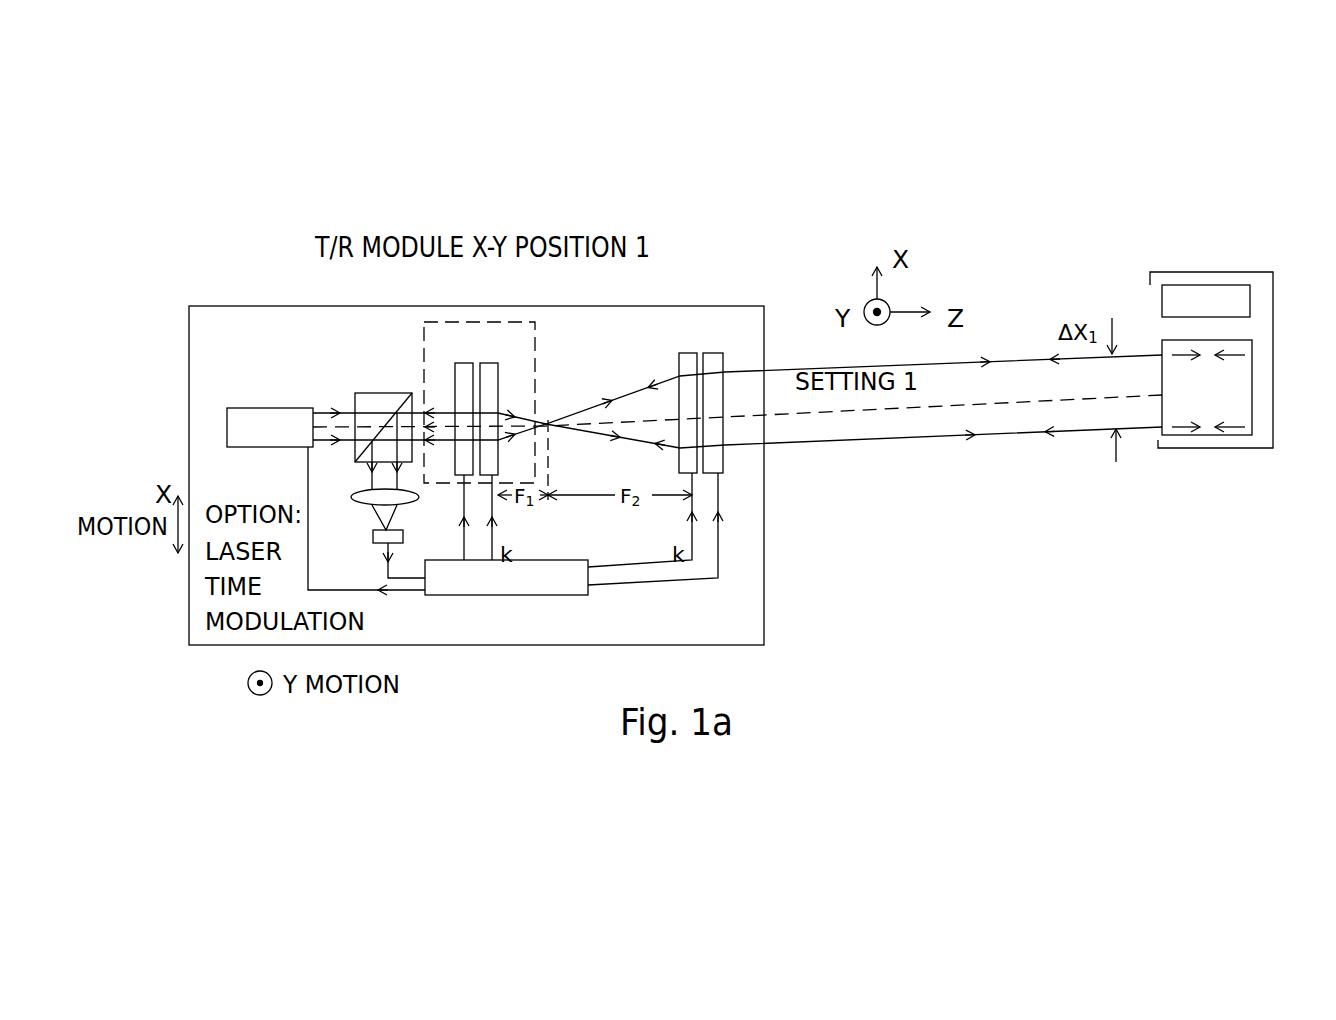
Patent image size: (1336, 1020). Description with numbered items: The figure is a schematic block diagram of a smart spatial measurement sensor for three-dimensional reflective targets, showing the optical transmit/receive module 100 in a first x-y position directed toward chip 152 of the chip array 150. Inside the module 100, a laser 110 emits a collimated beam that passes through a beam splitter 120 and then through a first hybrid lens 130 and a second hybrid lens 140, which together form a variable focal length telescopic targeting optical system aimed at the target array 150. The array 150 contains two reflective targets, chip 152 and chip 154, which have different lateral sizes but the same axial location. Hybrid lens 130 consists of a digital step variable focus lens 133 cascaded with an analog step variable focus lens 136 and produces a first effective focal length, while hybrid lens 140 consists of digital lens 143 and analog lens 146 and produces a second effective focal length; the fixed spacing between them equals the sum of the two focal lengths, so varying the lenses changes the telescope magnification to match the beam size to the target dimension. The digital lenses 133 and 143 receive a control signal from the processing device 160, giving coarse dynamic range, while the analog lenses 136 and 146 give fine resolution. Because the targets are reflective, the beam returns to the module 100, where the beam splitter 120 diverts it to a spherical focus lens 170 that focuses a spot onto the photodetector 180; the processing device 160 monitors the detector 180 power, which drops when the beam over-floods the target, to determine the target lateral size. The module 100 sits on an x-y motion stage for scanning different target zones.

The T/R module 100 is at (256, 306).
The laser 110 is at (283, 408).
The beam splitter 120 is at (356, 393).
The hybrid lens 130 is at (535, 396).
The digital lens 133 is at (455, 387).
The analog lens 136 is at (487, 367).
The hybrid lens 140 is at (707, 374).
The digital lens 143 is at (679, 366).
The analog lens 146 is at (716, 364).
The chip array 150 is at (1274, 272).
The chip 152 is at (1247, 412).
The chip 154 is at (1162, 302).
The processing device 160 is at (526, 597).
The spherical focus lens 170 is at (358, 493).
The photodetector 180 is at (375, 540).